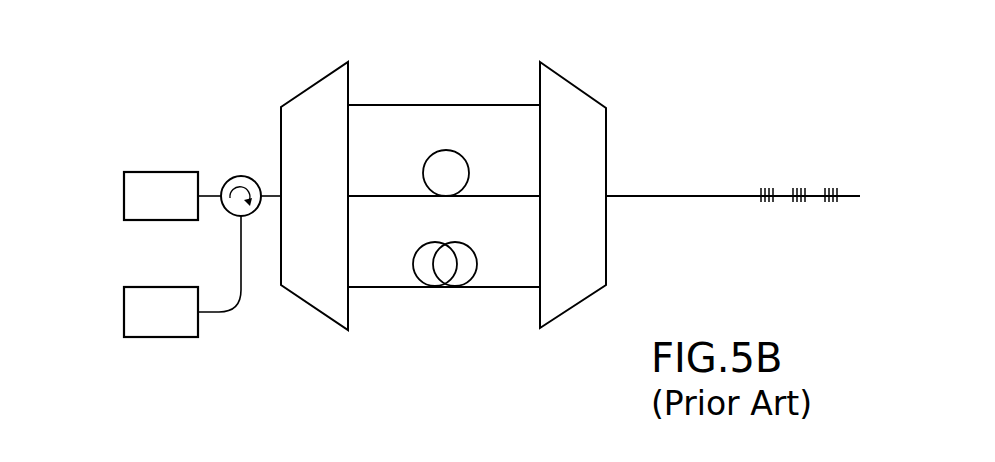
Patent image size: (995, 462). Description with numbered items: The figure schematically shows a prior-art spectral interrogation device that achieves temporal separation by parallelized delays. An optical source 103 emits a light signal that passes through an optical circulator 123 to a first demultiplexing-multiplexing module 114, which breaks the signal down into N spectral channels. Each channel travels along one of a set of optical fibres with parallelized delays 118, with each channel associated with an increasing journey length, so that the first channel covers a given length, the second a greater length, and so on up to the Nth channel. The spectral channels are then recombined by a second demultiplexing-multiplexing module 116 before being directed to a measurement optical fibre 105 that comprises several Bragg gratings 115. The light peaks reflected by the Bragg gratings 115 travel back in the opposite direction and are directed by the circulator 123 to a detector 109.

The optical source 103 is at (144, 178).
The optical circulator 123 is at (239, 177).
The detector 109 is at (128, 298).
The first demultiplexing-multiplexing module 114 is at (312, 87).
The second demultiplexing-multiplexing module 116 is at (580, 85).
The set of optical fibres with parallelized delays 118 is at (494, 105).
The measurement optical fibre 105 is at (685, 198).
The Bragg gratings 115 is at (797, 202).